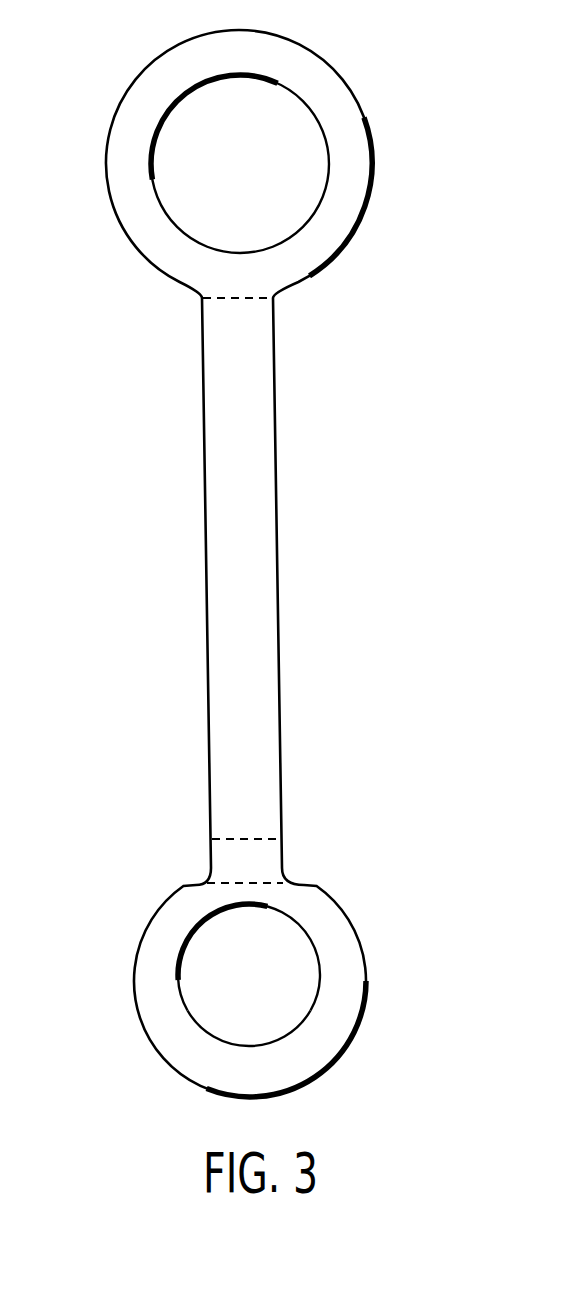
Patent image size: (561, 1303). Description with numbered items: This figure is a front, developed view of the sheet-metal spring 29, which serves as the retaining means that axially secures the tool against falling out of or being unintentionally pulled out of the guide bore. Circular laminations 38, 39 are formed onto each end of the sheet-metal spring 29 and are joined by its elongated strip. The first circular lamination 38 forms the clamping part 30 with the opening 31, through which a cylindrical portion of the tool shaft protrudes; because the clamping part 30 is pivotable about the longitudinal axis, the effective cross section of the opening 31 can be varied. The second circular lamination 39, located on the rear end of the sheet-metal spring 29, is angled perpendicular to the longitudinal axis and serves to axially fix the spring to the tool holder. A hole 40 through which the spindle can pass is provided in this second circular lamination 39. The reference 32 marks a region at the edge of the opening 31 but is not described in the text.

The sheet-metal spring 29 is at (263, 630).
The clamping part 30 is at (226, 563).
The opening 31 is at (259, 969).
The aperture wall 32 is at (222, 1038).
The first circular lamination 38 is at (345, 933).
The second circular lamination 39 is at (350, 127).
The hole 40 is at (241, 166).